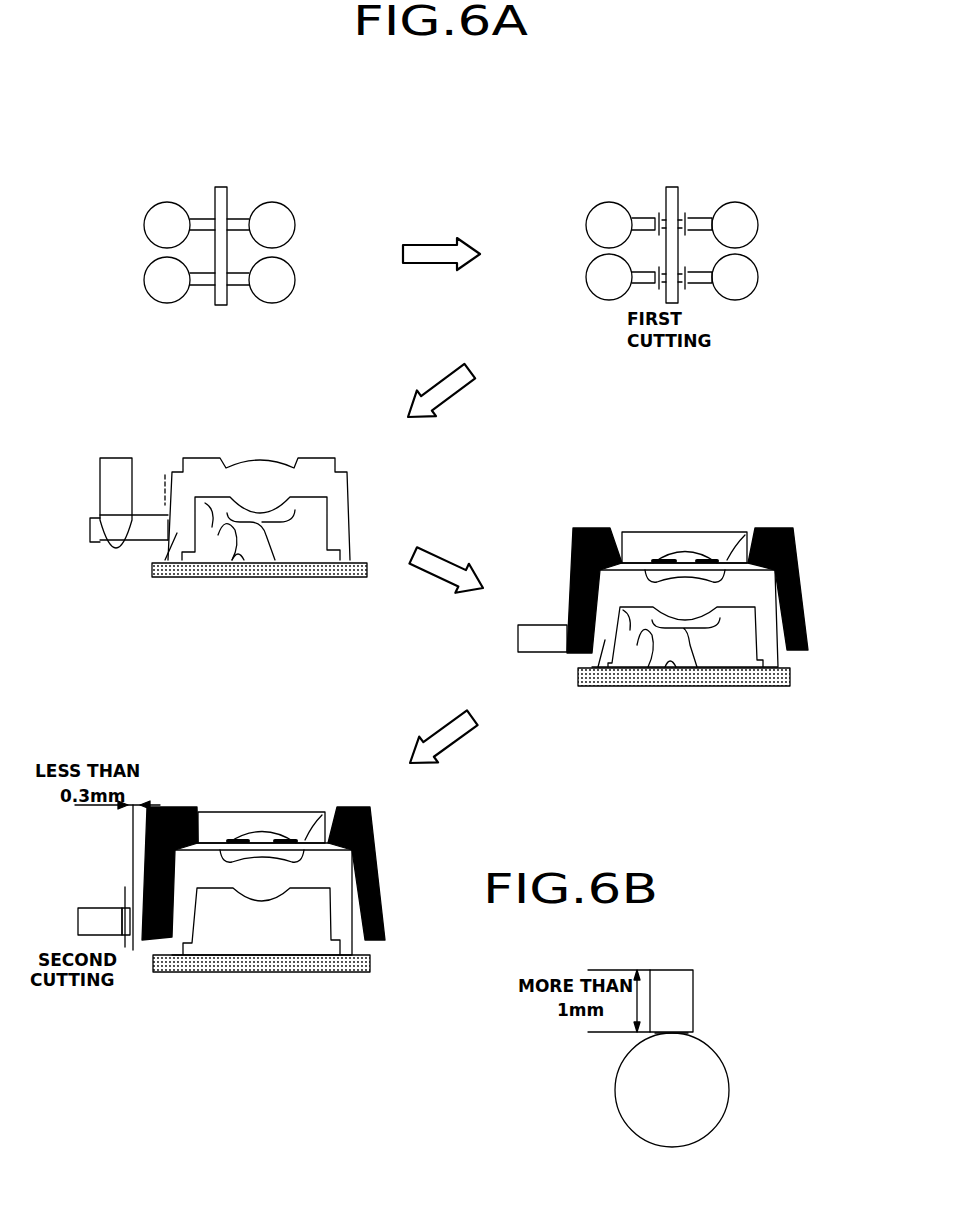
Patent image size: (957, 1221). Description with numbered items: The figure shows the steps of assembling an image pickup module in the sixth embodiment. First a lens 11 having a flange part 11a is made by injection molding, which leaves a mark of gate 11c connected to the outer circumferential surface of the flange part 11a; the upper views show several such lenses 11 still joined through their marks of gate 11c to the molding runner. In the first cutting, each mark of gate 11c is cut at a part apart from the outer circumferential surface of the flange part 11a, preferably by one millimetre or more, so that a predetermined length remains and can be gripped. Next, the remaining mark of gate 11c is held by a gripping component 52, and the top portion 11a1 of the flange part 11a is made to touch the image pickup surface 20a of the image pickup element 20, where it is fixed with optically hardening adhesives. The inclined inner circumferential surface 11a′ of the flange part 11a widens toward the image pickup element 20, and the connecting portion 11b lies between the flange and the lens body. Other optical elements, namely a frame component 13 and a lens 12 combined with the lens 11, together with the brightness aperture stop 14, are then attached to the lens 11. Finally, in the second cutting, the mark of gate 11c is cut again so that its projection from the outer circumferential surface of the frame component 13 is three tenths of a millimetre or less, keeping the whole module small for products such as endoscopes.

In FIG. 6A, the lens 11 is at (157, 222).
In FIG. 6B, the lens 11 is at (692, 1090).
In FIG. 6A, the flange part 11a is at (178, 533).
In FIG. 6A, the inner circumferential surface of the flange part 11a′ is at (225, 560).
In FIG. 6A, the top portion of the flange part 11a1 is at (168, 577).
In FIG. 6A, the lead connecting portion 11b is at (273, 563).
In FIG. 6A, the mark of gate 11c is at (203, 218).
In FIG. 6B, the mark of gate 11c is at (677, 997).
In FIG. 6A, the lens 12 is at (688, 532).
In FIG. 6A, the frame component 13 is at (592, 528).
In FIG. 6A, the brightness aperture stop 14 is at (745, 535).
In FIG. 6A, the image pickup element 20 is at (312, 565).
In FIG. 6A, the image pickup surface of the image pickup element 20a is at (256, 565).
In FIG. 6A, the gripping component 52 is at (118, 465).